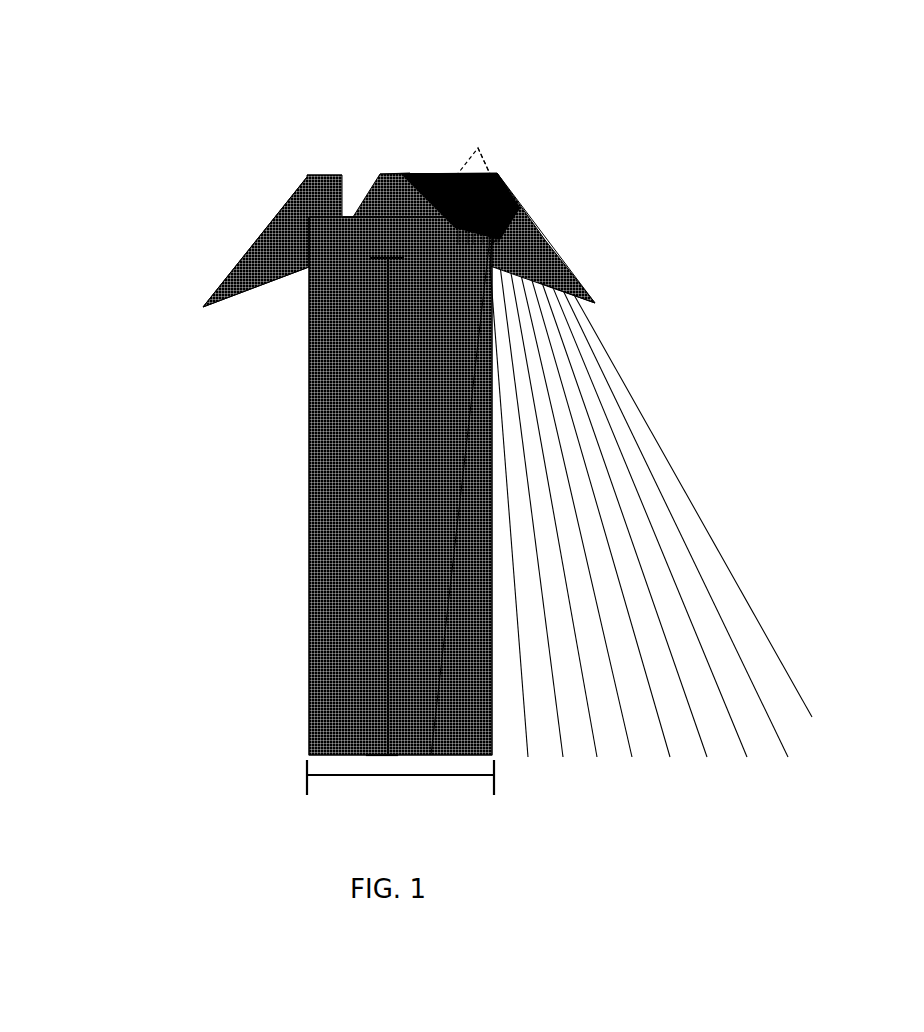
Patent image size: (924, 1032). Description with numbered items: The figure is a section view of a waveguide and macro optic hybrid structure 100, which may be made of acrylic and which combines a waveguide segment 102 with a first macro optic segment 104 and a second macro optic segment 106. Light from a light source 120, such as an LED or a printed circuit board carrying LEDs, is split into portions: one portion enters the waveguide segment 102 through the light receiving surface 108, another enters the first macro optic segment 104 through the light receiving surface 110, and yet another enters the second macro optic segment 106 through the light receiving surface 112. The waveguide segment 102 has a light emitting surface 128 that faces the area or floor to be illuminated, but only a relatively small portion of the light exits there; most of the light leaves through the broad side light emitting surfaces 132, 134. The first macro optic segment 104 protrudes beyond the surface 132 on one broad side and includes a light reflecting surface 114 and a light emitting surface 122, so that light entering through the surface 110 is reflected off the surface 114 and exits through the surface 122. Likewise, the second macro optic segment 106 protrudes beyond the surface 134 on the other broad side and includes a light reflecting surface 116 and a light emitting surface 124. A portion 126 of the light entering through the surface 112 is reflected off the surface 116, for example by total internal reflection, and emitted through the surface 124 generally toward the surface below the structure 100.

The waveguide and macro optic hybrid structure 100 is at (520, 421).
The waveguide segment 102 is at (348, 553).
The first macro optic segment 104 is at (270, 247).
The second macro optic segment 106 is at (560, 278).
The light receiving surface 108 is at (395, 212).
The light receiving surface 110 is at (338, 195).
The light receiving surface 112 is at (458, 177).
The light reflecting surface 114 is at (287, 197).
The light reflecting surface 116 is at (558, 258).
The light source 120 is at (400, 167).
The light emitting surface 122 is at (242, 290).
The light emitting surface 124 is at (573, 300).
The portion of the light 126 is at (487, 155).
The light emitting surface 128 is at (340, 753).
The light emitting surface 132 is at (303, 468).
The light emitting surface 134 is at (494, 678).